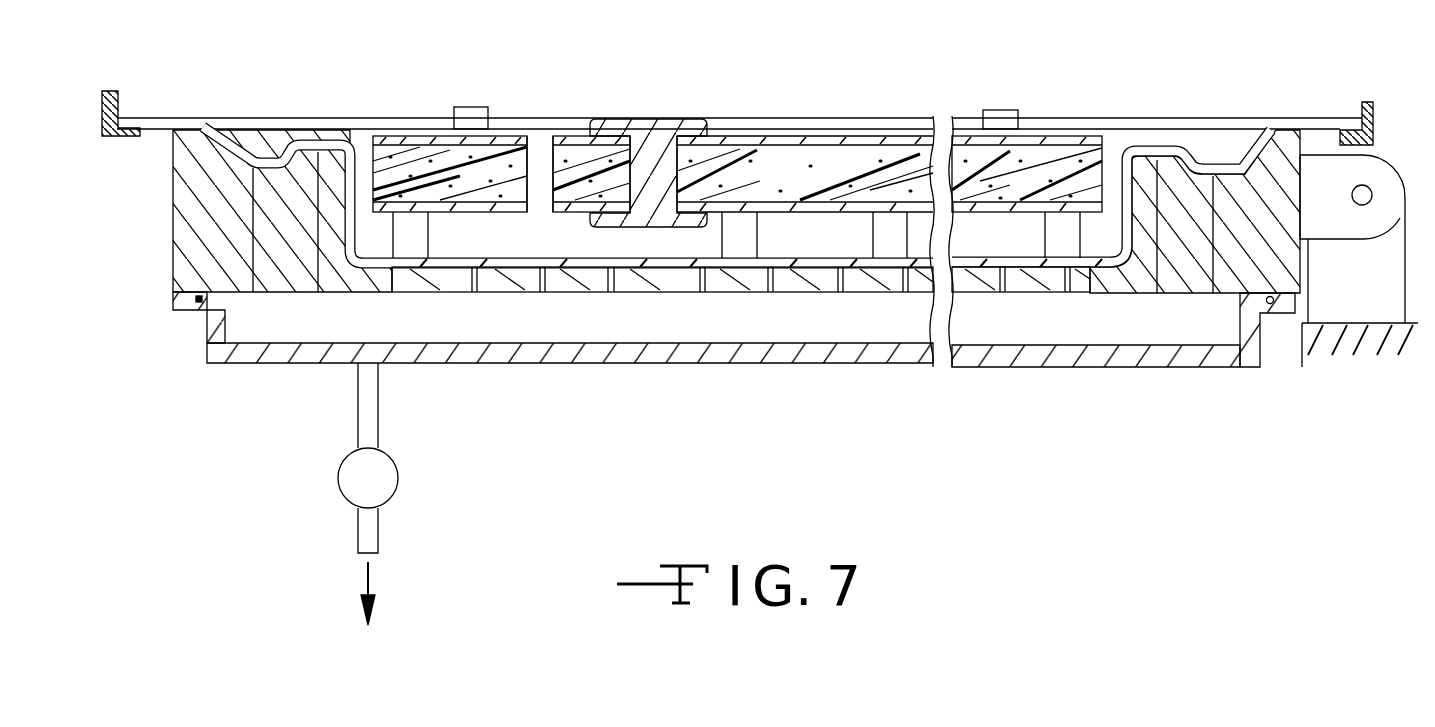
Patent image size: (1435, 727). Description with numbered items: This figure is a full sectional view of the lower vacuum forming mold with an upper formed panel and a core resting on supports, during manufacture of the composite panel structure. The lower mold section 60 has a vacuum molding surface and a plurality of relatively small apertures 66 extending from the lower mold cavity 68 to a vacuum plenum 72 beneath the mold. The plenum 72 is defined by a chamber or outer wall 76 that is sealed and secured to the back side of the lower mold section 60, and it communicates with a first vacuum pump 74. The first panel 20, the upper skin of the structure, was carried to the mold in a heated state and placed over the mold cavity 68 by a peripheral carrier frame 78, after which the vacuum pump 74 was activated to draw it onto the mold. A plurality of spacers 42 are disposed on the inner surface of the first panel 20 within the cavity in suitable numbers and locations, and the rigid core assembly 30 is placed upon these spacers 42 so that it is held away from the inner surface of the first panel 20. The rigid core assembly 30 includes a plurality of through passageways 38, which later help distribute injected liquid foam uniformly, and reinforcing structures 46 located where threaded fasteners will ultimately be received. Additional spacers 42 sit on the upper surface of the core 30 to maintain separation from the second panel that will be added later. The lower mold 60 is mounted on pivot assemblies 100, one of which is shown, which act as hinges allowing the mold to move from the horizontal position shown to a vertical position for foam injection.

The first panel 20 is at (1146, 147).
The rigid core assembly 30 is at (818, 140).
The passageways 38 is at (543, 158).
The spacers 42 is at (470, 107).
The reinforcing structures 46 is at (653, 135).
The lower mold section 60 is at (200, 178).
The apertures 66 is at (629, 272).
The lower mold cavity 68 is at (540, 245).
The vacuum plenum 72 is at (781, 340).
The first vacuum pump 74 is at (398, 477).
The outer wall 76 is at (848, 356).
The peripheral carrier frame 78 is at (117, 91).
The pivot assemblies 100 is at (1397, 153).